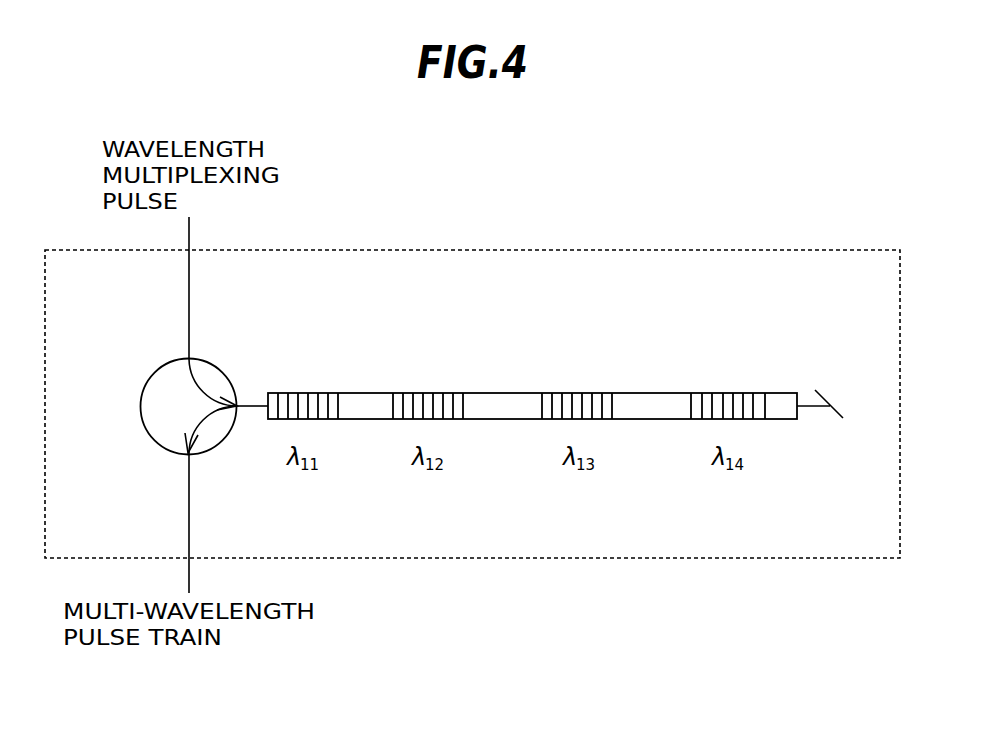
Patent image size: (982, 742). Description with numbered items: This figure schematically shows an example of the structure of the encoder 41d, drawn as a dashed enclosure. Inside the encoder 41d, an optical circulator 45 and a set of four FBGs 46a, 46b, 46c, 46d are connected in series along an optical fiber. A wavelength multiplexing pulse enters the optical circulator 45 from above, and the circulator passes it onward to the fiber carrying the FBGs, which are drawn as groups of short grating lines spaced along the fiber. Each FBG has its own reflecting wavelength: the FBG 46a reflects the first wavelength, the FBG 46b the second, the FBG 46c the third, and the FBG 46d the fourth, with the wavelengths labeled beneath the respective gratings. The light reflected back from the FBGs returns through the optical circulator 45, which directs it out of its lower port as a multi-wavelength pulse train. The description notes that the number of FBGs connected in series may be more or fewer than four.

The encoder 41d is at (783, 250).
The optical circulator 45 is at (150, 378).
The FBG 46a is at (325, 393).
The FBG 46b is at (450, 393).
The FBG 46c is at (598, 393).
The FBG 46d is at (750, 393).